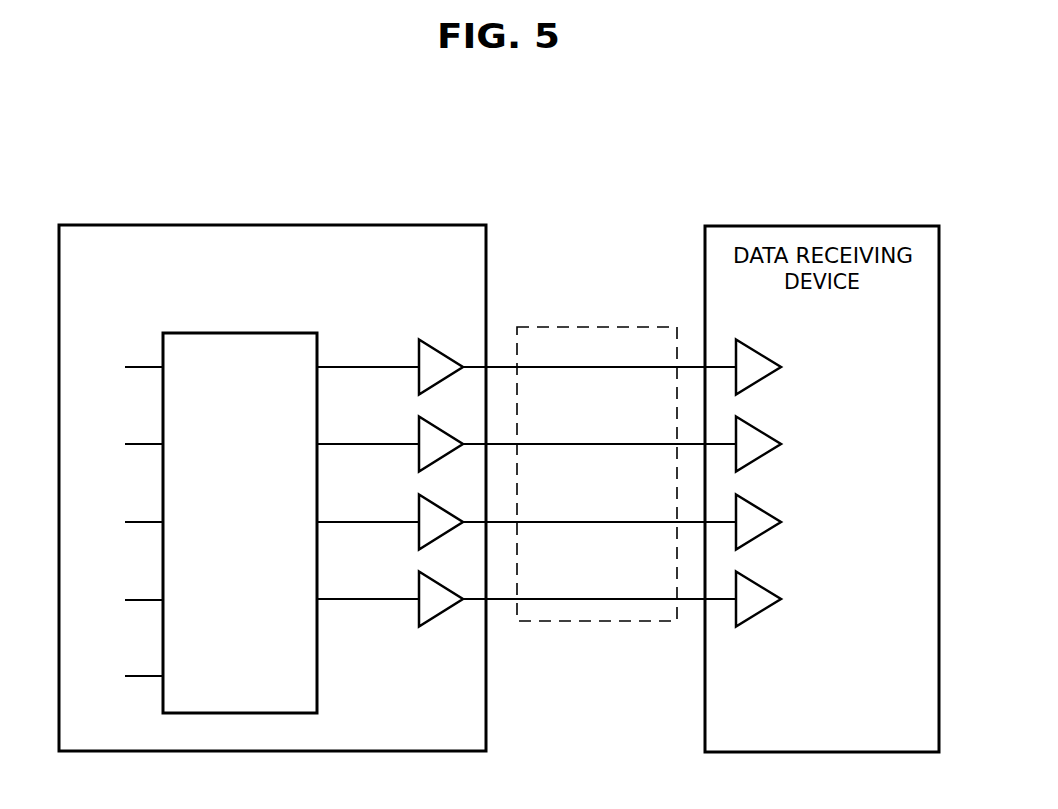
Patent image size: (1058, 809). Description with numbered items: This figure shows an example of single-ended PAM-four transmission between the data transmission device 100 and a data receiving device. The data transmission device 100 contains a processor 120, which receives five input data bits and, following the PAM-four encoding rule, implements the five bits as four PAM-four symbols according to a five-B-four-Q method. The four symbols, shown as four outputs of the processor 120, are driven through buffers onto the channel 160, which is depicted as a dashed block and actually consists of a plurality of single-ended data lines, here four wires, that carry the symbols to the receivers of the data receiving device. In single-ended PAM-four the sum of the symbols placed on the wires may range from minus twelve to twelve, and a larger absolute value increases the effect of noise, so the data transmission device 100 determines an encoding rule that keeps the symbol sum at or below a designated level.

The data transmission device 100 is at (413, 223).
The processor 120 is at (243, 332).
The channel 160 is at (610, 327).